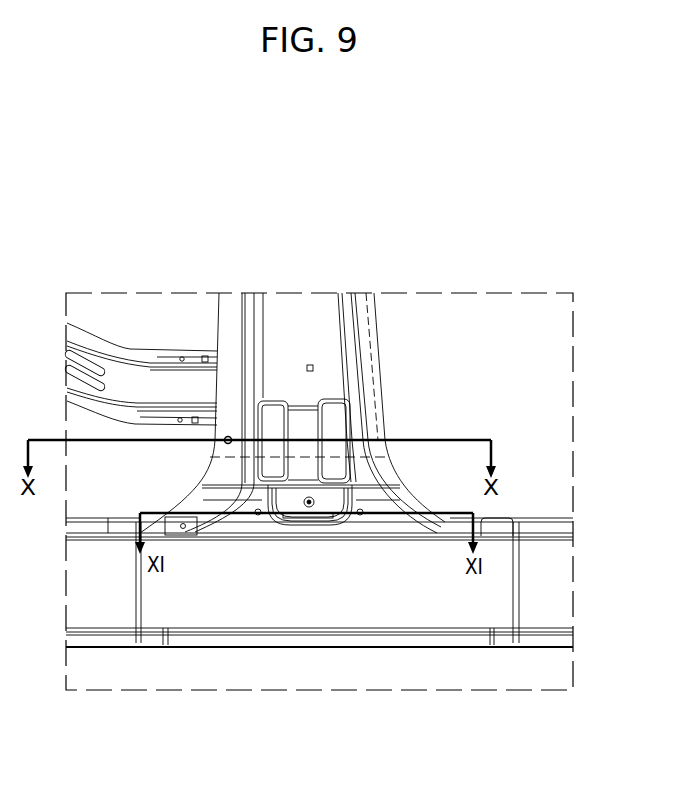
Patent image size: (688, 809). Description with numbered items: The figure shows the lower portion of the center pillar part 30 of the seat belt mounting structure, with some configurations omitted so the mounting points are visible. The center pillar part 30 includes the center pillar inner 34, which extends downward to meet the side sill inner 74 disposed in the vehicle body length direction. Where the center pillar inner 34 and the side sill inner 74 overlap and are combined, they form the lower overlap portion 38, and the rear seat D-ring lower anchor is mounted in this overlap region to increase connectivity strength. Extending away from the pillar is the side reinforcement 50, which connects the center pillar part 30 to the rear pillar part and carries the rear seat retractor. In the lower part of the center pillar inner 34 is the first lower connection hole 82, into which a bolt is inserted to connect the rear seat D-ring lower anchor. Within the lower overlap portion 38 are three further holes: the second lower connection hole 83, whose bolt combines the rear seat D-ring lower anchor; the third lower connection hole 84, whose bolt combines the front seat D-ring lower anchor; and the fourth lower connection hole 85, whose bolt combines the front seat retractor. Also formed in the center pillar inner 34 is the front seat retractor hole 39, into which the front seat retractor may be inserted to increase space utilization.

The center pillar part 30 is at (346, 272).
The center pillar inner 34 is at (299, 308).
The lower overlap portion 38 is at (586, 458).
The front seat retractor hole 39 is at (298, 413).
The side reinforcement 50 is at (100, 343).
The side sill inner 74 is at (483, 530).
The first lower connection hole 82 is at (230, 436).
The second lower connection hole 83 is at (260, 516).
The third lower connection hole 84 is at (360, 516).
The fourth lower connection hole 85 is at (311, 508).